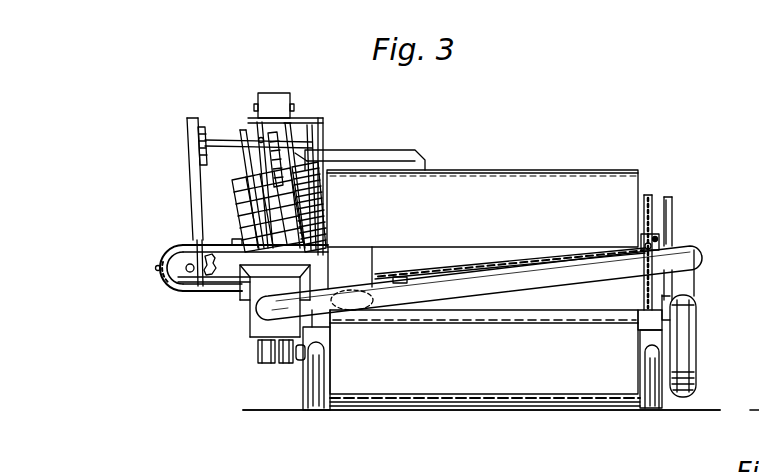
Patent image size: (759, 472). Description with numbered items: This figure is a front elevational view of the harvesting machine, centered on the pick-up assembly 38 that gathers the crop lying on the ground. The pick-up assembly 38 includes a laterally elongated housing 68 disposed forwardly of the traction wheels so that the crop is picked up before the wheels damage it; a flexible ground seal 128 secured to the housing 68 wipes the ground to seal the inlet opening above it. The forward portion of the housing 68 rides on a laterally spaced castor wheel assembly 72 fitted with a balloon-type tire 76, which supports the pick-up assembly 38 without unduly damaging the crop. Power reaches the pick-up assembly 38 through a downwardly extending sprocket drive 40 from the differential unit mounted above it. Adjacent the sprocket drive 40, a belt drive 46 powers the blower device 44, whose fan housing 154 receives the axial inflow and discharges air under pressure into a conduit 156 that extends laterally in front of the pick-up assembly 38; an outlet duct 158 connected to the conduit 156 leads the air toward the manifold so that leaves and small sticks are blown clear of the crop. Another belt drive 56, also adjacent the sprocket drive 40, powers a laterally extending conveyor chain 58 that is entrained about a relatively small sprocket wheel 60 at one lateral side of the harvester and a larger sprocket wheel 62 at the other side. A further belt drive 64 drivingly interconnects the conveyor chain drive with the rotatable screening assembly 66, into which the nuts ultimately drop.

The pick-up assembly 38 is at (452, 405).
The sprocket drive 40 is at (648, 196).
The blower device 44 is at (699, 317).
The belt drive 46 is at (668, 301).
The belt drive 56 is at (674, 222).
The conveyor chain 58 is at (470, 271).
The sprocket wheel 60 is at (645, 233).
The sprocket wheel 62 is at (180, 253).
The belt drive 64 is at (188, 190).
The screening assembly 66 is at (328, 220).
The housing 68 is at (484, 352).
The castor wheel assembly 72 is at (288, 366).
The balloon-type tire 76 is at (648, 409).
The ground seal 128 is at (550, 407).
The fan housing 154 is at (684, 356).
The conduit 156 is at (586, 266).
The outlet duct 158 is at (362, 263).